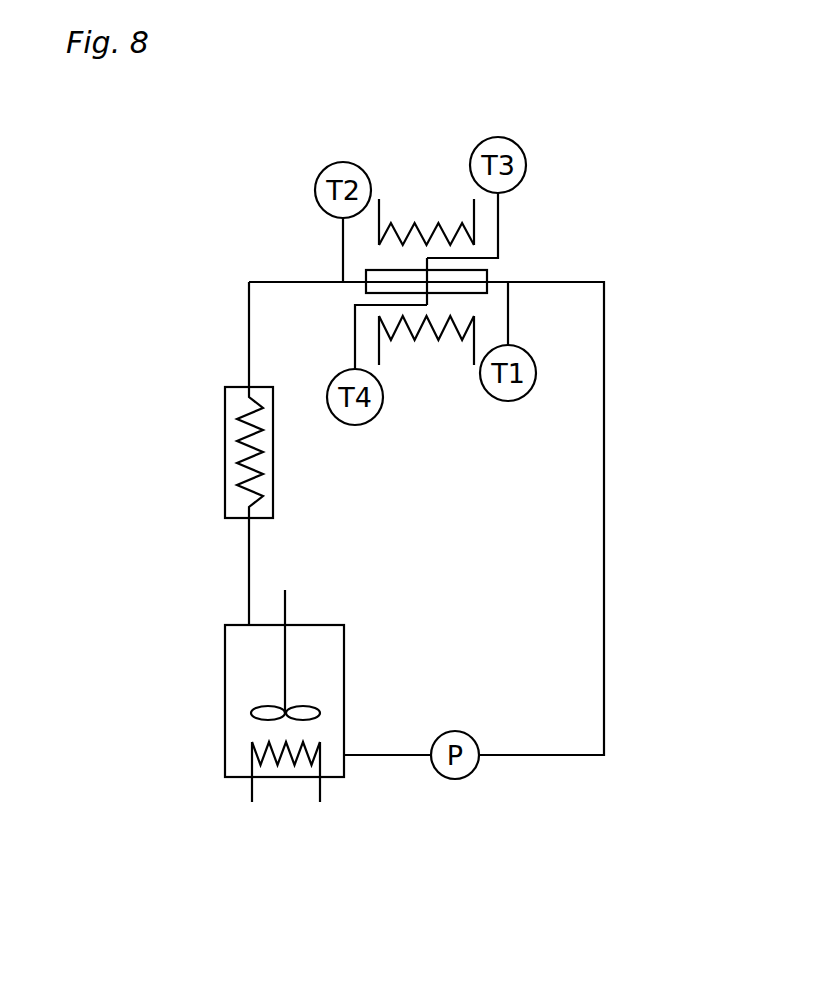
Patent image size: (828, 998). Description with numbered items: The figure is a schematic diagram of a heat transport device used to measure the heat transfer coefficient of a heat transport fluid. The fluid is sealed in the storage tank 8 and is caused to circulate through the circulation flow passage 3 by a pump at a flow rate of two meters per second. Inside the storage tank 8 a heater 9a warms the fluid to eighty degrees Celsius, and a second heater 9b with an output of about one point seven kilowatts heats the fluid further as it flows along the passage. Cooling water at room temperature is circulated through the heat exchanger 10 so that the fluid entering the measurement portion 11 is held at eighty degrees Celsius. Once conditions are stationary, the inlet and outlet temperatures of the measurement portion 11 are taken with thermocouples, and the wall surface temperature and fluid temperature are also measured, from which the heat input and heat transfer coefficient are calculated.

The circulation flow passage 3 is at (603, 470).
The storage tank 8 is at (225, 693).
The heater 9a is at (253, 760).
The heater 9b is at (474, 230).
The heat exchanger 10 is at (225, 443).
The measurement portion 11 is at (487, 275).